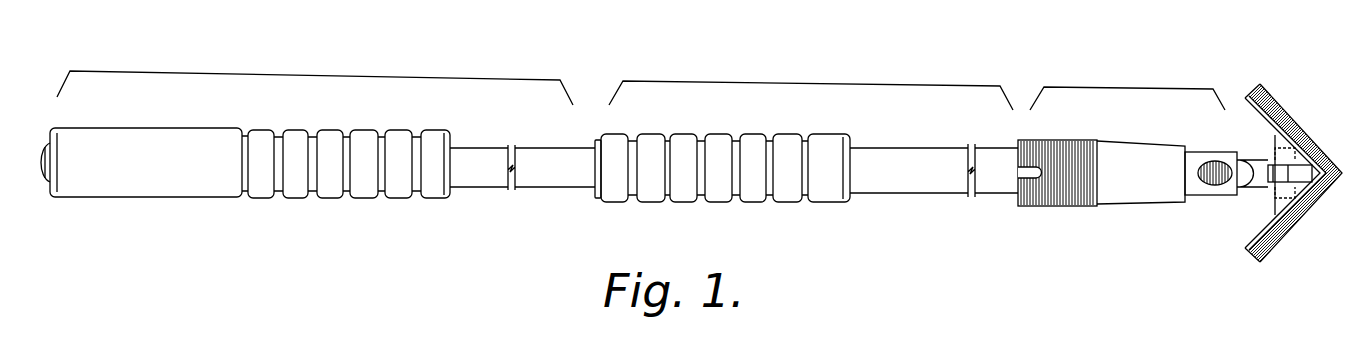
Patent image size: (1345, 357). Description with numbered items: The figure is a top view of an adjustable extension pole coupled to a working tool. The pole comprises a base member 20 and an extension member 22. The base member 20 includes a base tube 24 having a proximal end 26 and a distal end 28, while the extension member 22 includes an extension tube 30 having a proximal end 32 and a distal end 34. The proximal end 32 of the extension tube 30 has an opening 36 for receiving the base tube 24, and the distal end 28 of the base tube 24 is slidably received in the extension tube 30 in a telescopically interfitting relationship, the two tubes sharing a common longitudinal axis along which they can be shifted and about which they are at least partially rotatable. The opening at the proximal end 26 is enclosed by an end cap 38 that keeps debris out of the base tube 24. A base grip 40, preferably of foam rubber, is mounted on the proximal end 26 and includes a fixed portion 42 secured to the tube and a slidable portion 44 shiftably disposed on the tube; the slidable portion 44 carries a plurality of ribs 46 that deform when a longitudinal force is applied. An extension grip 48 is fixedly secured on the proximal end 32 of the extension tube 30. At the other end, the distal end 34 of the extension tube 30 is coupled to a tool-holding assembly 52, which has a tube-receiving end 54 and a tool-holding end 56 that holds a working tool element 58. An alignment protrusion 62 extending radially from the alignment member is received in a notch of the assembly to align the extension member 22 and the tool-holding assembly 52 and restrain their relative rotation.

The base member 20 is at (312, 77).
The extension member 22 is at (818, 83).
The base tube 24 is at (480, 160).
The proximal end 26 is at (83, 198).
The distal end 28 is at (553, 180).
The extension tube 30 is at (917, 185).
The proximal end 32 is at (648, 202).
The distal end 34 is at (1010, 197).
The opening 36 is at (597, 174).
The end cap 38 is at (41, 172).
The base grip 40 is at (233, 198).
The fixed portion 42 is at (165, 198).
The slidable portion 44 is at (330, 198).
The ribs 46 is at (433, 199).
The extension grip 48 is at (753, 203).
The tool-holding assembly 52 is at (1117, 88).
The tube-receiving end 54 is at (1045, 207).
The tool-holding end 56 is at (1232, 197).
The working tool element 58 is at (1284, 89).
The alignment protrusion 62 is at (1020, 172).